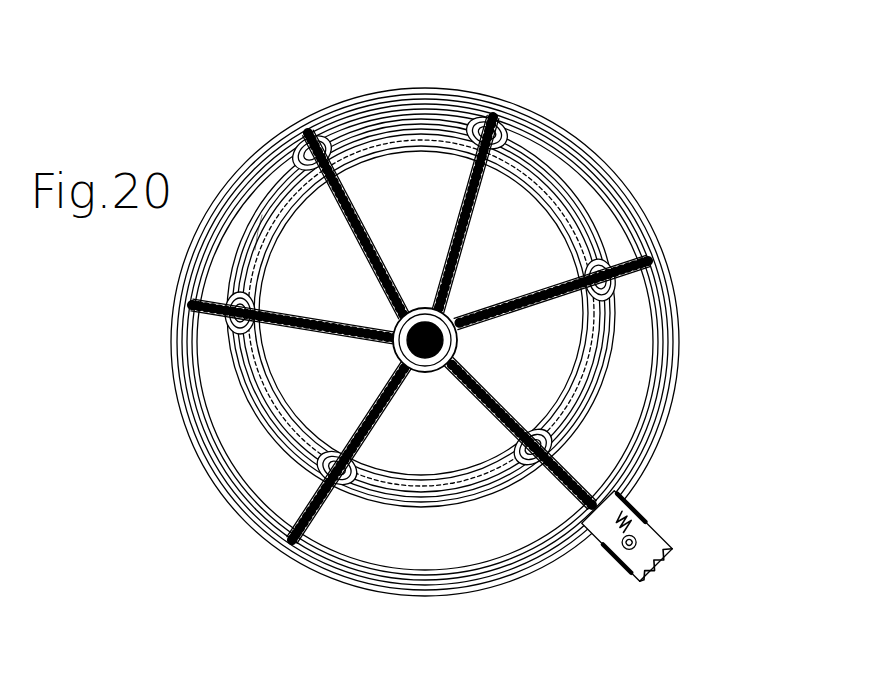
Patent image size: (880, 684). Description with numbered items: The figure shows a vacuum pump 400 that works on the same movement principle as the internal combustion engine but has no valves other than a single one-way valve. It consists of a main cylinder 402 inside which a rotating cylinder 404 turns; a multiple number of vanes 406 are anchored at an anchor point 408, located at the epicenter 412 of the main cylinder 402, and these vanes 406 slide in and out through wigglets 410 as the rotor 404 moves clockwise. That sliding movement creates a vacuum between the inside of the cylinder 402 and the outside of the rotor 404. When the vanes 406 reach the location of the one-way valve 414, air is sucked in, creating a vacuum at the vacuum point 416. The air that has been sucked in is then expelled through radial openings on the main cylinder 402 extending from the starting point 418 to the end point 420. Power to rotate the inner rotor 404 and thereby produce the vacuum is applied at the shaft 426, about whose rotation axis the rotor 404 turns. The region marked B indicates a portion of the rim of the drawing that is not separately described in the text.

The vacuum pump 400 is at (452, 77).
The main cylinder 402 is at (684, 333).
The rotating cylinder 404 is at (432, 507).
The vanes 406 is at (340, 198).
The anchor point 408 is at (454, 313).
The wigglets 410 is at (258, 303).
The epicenter 412 is at (430, 341).
The one-way valve 414 is at (650, 547).
The vacuum point 416 is at (654, 563).
The starting point of radial openings 418 is at (292, 122).
The end point of radial openings 420 is at (270, 549).
The shaft 426 is at (421, 305).
The detail region B is at (282, 228).